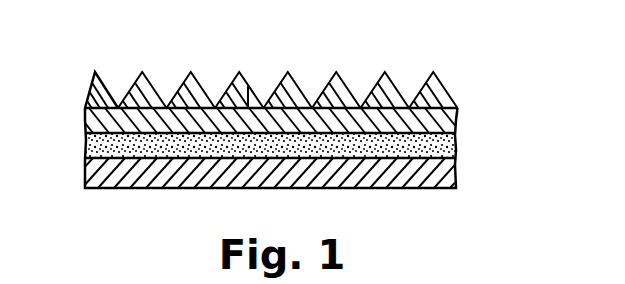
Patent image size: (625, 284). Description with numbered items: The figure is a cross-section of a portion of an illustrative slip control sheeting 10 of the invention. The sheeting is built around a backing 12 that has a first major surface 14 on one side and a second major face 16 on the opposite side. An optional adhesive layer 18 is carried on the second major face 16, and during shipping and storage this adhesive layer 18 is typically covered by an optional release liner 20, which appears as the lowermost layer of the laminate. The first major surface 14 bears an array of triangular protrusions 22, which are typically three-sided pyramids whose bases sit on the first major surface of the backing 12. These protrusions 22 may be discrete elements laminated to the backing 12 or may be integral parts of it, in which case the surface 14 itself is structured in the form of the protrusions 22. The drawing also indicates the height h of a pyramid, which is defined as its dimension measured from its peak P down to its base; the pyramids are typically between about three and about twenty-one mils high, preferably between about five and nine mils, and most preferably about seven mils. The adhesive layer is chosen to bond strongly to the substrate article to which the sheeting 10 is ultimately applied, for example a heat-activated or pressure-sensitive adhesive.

The slip control sheeting 10 is at (460, 53).
The backing 12 is at (438, 125).
The first major surface 14 is at (339, 78).
The second major face 16 is at (446, 150).
The adhesive layer 18 is at (92, 147).
The release liner 20 is at (228, 172).
The triangular protrusions 22 is at (144, 71).
The peak P is at (233, 72).
The height h is at (249, 87).